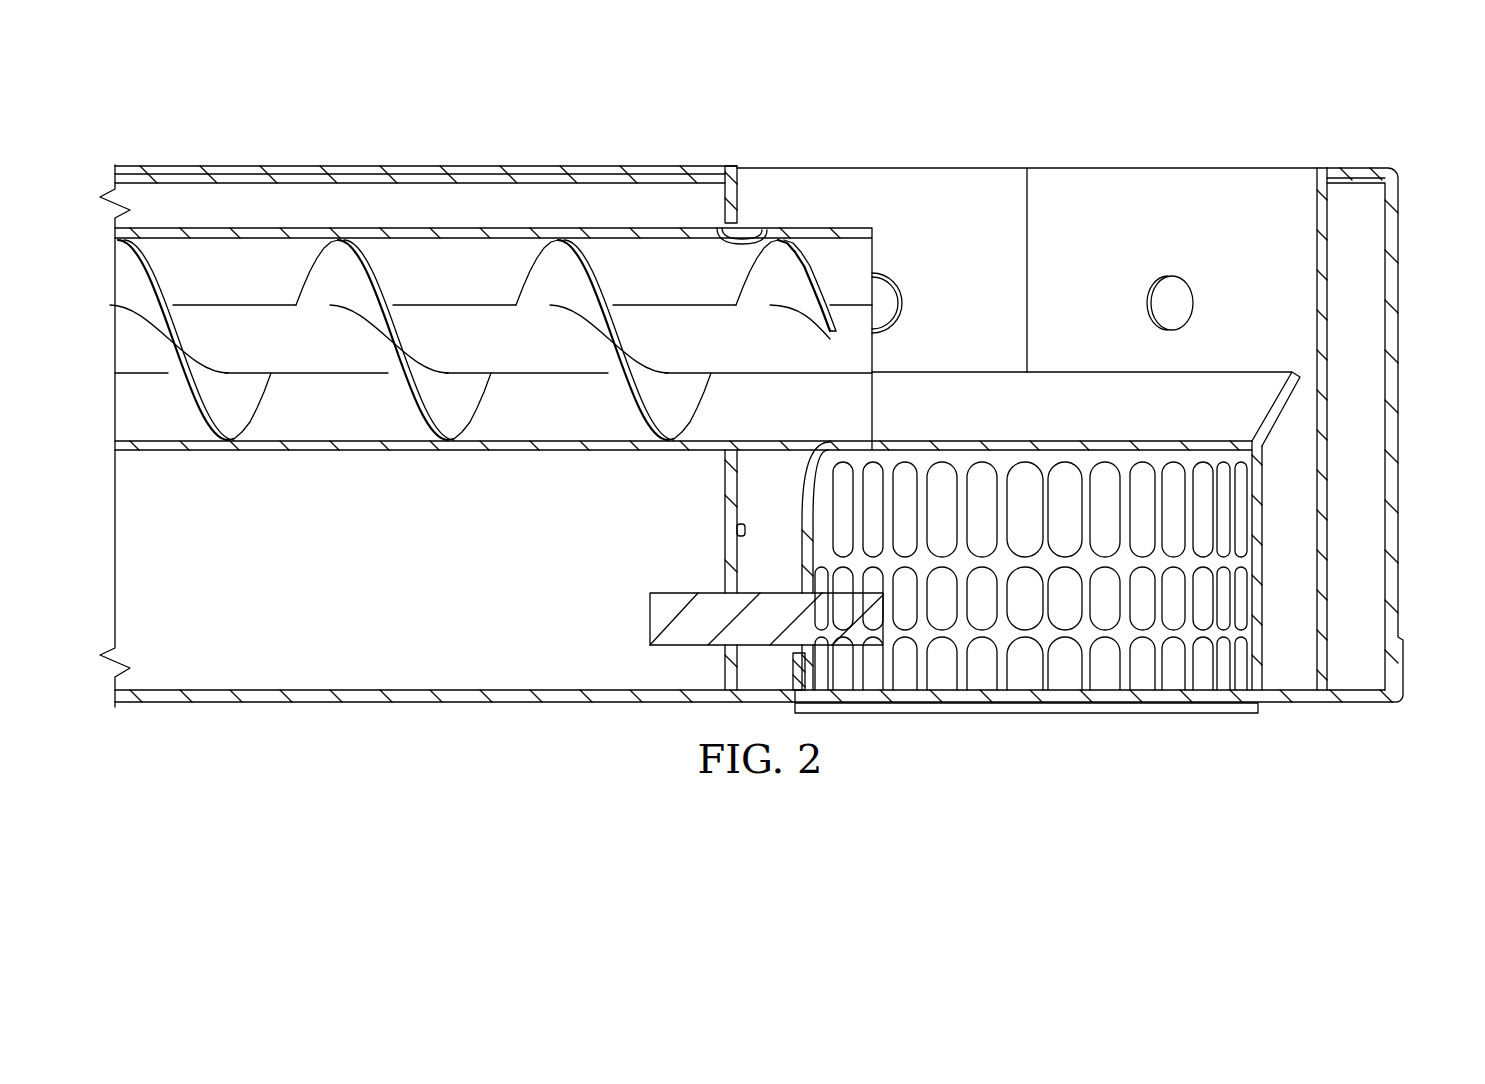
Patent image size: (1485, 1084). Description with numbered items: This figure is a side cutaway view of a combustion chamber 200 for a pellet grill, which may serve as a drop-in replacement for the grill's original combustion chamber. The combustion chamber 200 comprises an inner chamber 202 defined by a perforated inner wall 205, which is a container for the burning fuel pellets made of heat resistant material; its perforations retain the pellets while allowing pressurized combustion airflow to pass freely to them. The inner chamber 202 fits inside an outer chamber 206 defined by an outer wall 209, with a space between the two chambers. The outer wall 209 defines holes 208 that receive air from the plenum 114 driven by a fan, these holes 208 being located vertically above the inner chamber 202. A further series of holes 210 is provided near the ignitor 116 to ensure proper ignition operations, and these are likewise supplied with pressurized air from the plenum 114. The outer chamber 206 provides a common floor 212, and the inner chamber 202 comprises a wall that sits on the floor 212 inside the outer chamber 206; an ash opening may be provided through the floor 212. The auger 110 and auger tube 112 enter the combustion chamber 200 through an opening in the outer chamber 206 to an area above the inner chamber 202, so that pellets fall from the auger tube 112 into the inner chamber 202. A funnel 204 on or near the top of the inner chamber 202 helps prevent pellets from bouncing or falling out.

The auger 110 is at (452, 305).
The auger tube 112 is at (313, 452).
The plenum 114 is at (414, 703).
The ignitor 116 is at (649, 617).
The combustion chamber 200 is at (1211, 165).
The inner chamber 202 is at (1013, 518).
The funnel 204 is at (1248, 380).
The inner wall 205 is at (1263, 565).
The outer chamber 206 is at (1278, 507).
The holes 208 is at (893, 284).
The outer wall 209 is at (1328, 273).
The holes 210 is at (727, 530).
The floor 212 is at (1052, 703).